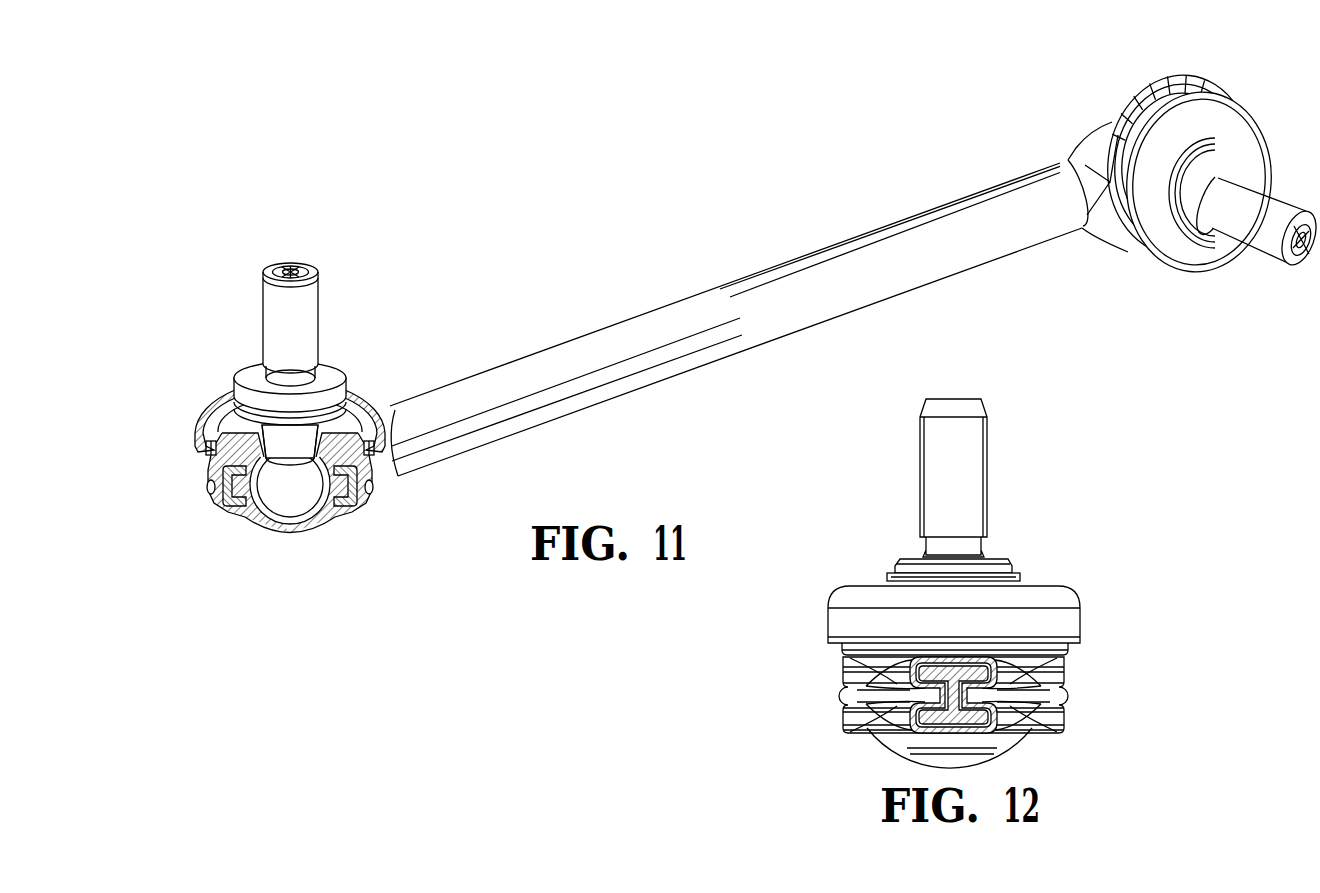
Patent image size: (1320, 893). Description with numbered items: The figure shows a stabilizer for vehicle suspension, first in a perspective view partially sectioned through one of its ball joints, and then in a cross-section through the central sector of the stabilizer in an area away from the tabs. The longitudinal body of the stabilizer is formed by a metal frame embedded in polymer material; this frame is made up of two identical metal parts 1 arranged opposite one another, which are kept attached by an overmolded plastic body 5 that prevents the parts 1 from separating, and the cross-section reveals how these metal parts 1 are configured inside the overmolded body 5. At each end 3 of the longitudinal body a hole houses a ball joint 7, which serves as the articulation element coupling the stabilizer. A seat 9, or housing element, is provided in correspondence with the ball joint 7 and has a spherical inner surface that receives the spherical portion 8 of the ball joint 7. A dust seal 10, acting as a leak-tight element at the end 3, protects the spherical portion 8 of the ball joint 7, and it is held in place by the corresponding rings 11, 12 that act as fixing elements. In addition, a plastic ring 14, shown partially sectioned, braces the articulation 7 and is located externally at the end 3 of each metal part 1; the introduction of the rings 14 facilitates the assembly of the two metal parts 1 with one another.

In FIG. 11, the metal part 1 is at (357, 524).
In FIG. 12, the metal part 1 is at (930, 670).
In FIG. 11, the end 3 is at (237, 503).
In FIG. 11, the overmolded plastic body 5 is at (528, 372).
In FIG. 12, the overmolded plastic body 5 is at (863, 717).
In FIG. 11, the ball joint 7 is at (330, 306).
In FIG. 12, the ball joint 7 is at (1003, 464).
In FIG. 11, the spherical portion 8 is at (288, 503).
In FIG. 11, the seat 9 is at (297, 523).
In FIG. 12, the dust seal 10 is at (1058, 600).
In FIG. 12, the ring 11 is at (905, 648).
In FIG. 12, the ring 12 is at (1018, 572).
In FIG. 11, the plastic ring 14 is at (235, 478).